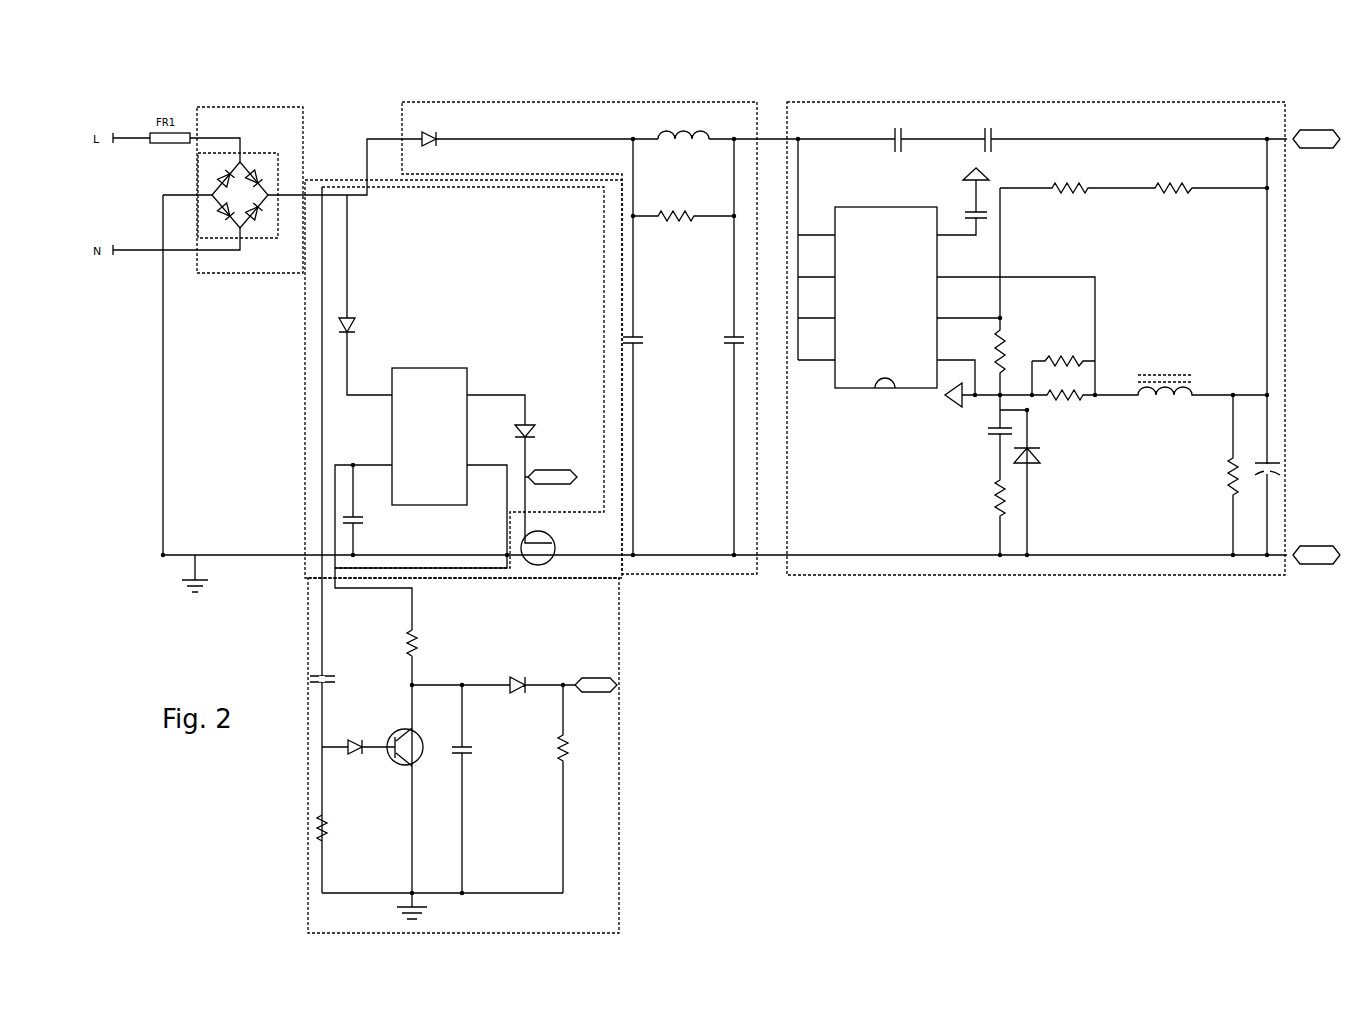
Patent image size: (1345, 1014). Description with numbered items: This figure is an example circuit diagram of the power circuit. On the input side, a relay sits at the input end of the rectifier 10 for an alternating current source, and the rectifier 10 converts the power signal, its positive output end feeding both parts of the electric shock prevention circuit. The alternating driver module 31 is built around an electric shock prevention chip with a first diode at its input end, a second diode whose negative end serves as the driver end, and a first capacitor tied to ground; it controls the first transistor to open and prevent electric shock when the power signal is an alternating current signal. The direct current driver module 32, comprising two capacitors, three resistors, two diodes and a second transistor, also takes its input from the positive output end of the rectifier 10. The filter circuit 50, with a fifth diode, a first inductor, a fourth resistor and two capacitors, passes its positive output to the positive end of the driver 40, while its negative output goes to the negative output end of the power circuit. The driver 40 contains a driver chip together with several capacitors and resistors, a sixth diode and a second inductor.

The rectifier 10 is at (250, 105).
The alternating driver module 31 is at (322, 187).
The direct current driver module 32 is at (620, 768).
The driver 40 is at (1035, 102).
The filter circuit 50 is at (623, 102).